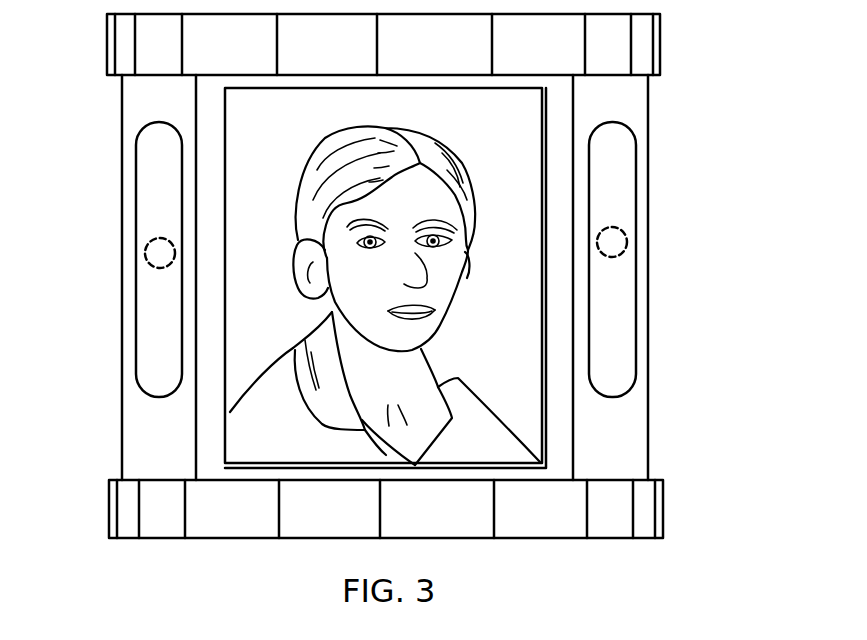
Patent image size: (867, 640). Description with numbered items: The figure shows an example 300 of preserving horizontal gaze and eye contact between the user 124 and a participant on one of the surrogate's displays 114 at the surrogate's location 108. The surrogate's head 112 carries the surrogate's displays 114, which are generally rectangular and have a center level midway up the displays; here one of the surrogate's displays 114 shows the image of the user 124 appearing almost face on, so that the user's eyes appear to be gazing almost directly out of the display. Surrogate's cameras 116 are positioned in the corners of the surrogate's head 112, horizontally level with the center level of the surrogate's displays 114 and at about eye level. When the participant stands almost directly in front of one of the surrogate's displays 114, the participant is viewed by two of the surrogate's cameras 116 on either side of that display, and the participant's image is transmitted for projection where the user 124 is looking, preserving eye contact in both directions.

The surrogate's location 108 is at (282, 123).
The surrogate's head 112 is at (446, 55).
The surrogate's displays 114 is at (537, 312).
The surrogate's cameras 116 is at (145, 262).
The user 124 is at (496, 461).
The example 300 is at (676, 262).